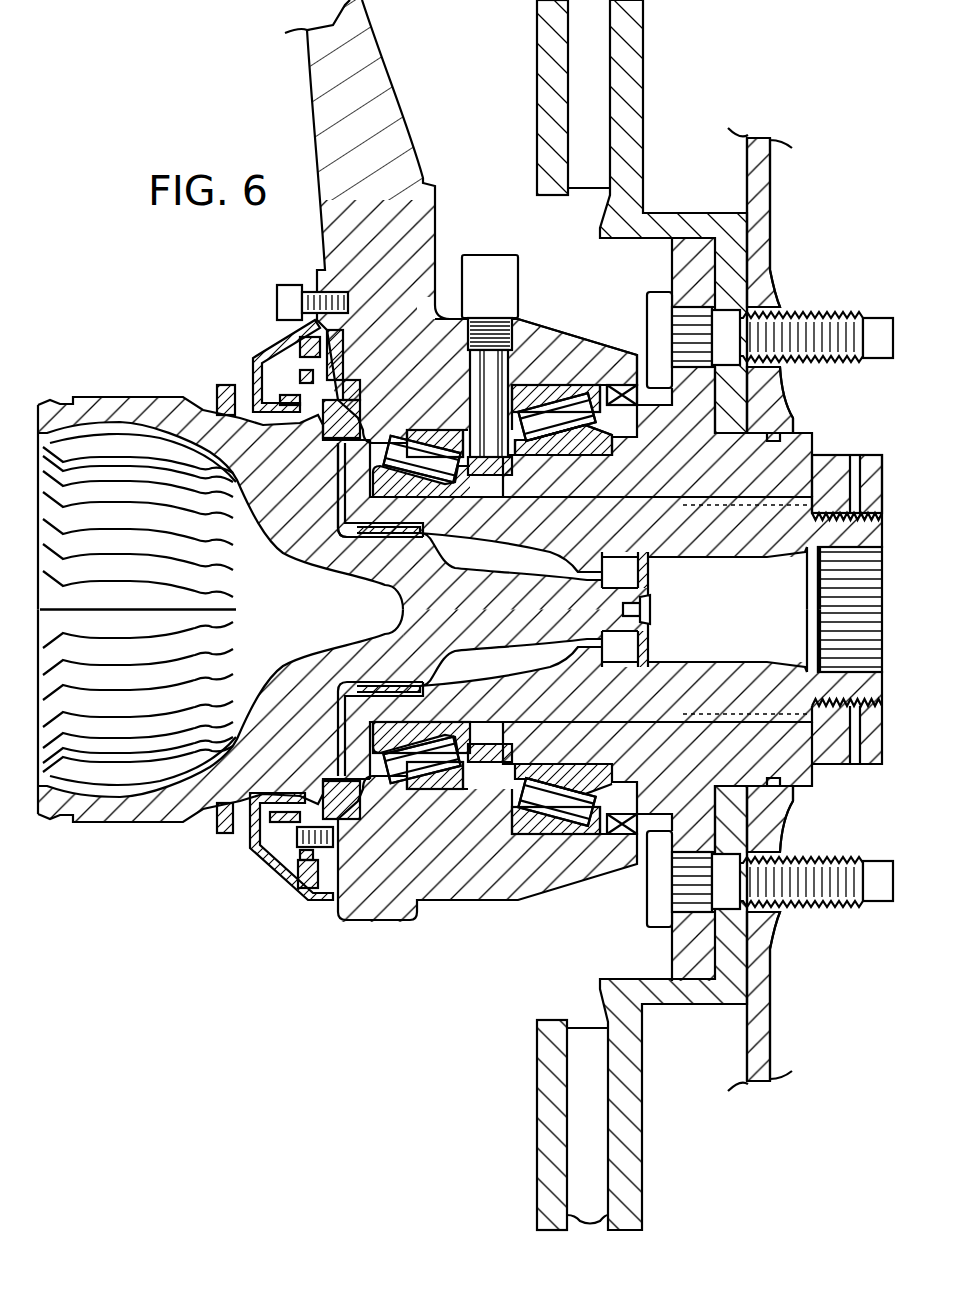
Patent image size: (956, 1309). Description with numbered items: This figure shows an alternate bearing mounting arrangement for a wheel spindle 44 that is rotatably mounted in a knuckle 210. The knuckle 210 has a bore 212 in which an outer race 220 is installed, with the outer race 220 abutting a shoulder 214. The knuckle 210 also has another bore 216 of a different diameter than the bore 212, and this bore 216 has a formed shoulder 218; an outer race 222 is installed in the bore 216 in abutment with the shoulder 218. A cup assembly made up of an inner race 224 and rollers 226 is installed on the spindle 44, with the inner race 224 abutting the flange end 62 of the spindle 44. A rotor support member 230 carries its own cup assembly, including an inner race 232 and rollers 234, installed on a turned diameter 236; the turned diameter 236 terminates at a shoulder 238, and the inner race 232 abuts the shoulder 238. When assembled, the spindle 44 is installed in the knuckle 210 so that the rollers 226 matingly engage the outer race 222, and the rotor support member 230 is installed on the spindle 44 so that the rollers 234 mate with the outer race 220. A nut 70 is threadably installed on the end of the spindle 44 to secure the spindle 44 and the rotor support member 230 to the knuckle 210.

The spindle 44 is at (612, 544).
The flange end 62 is at (340, 472).
The nut 70 is at (877, 477).
The knuckle 210 is at (325, 92).
The bore 212 is at (604, 388).
The shoulder 214 is at (545, 824).
The bore 216 is at (400, 792).
The shoulder 218 is at (443, 792).
The outer race 220 is at (530, 387).
The outer race 222 is at (453, 430).
The inner race 224 is at (358, 489).
The rollers 226 is at (405, 458).
The rotor support member 230 is at (810, 450).
The inner race 232 is at (593, 447).
The rollers 234 is at (570, 408).
The turned diameter 236 is at (547, 447).
The shoulder 238 is at (620, 410).